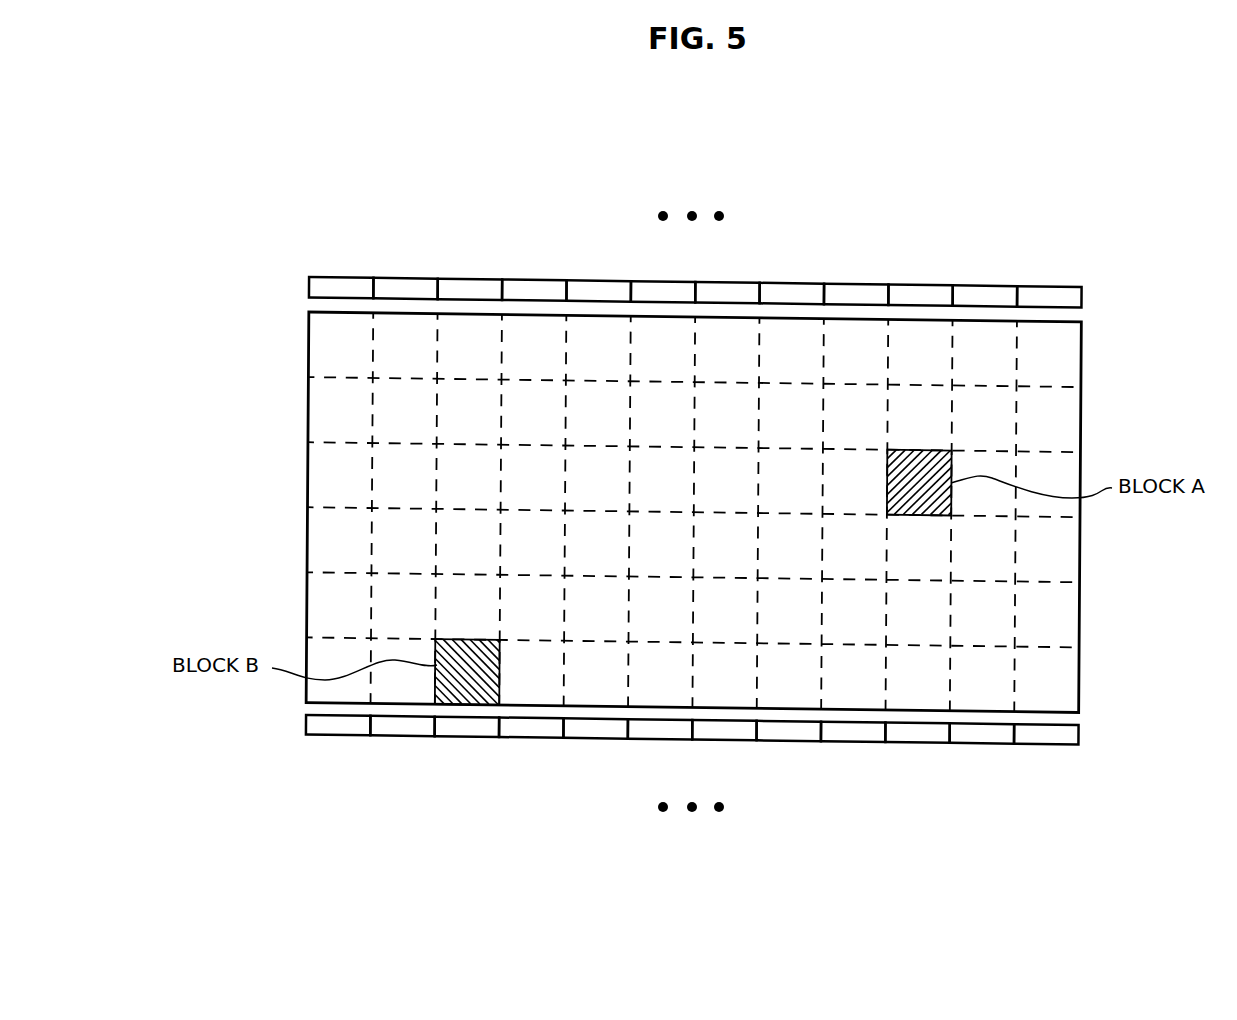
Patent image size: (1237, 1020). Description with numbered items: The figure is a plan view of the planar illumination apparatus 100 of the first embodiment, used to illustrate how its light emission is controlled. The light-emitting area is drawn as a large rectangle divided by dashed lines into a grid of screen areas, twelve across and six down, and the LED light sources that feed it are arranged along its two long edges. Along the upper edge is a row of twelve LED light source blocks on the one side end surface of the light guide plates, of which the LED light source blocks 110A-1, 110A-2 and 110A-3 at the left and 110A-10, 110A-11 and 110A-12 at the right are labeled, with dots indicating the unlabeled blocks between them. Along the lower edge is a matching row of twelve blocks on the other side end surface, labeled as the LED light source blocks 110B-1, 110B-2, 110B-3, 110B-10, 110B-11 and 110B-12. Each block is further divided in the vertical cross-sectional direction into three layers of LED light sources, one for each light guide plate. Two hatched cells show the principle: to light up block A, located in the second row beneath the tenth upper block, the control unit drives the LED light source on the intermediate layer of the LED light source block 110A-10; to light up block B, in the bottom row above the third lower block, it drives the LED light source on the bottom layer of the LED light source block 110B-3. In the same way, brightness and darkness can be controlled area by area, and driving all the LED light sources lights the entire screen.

The planar illumination apparatus 100 is at (295, 138).
The LED light source block 110A-1 is at (341, 277).
The LED light source block 110A-2 is at (402, 277).
The LED light source block 110A-3 is at (468, 277).
The LED light source block 110A-10 is at (917, 287).
The LED light source block 110A-11 is at (982, 287).
The LED light source block 110A-12 is at (1046, 287).
The LED light source block 110B-1 is at (340, 737).
The LED light source block 110B-2 is at (405, 737).
The LED light source block 110B-3 is at (470, 737).
The LED light source block 110B-10 is at (918, 745).
The LED light source block 110B-11 is at (983, 745).
The LED light source block 110B-12 is at (1048, 745).